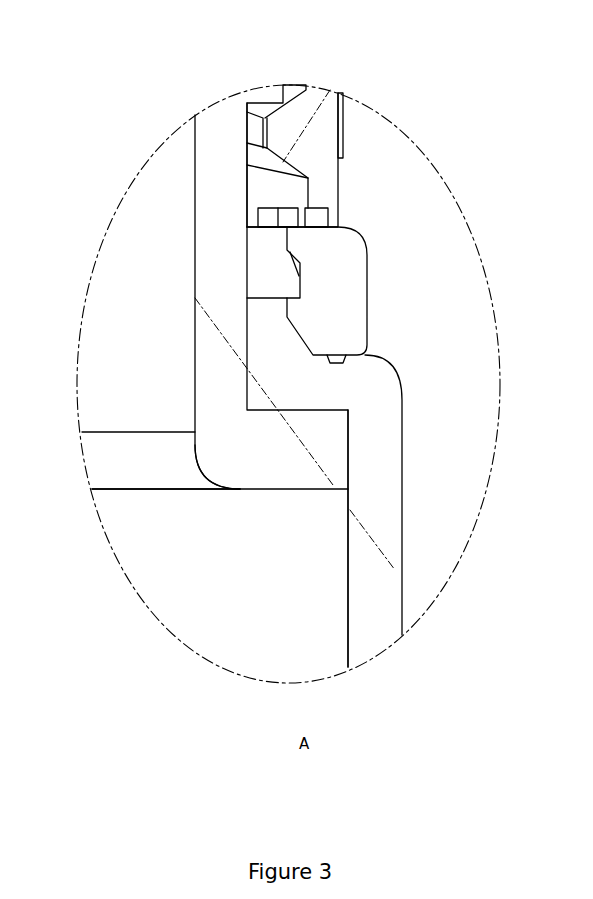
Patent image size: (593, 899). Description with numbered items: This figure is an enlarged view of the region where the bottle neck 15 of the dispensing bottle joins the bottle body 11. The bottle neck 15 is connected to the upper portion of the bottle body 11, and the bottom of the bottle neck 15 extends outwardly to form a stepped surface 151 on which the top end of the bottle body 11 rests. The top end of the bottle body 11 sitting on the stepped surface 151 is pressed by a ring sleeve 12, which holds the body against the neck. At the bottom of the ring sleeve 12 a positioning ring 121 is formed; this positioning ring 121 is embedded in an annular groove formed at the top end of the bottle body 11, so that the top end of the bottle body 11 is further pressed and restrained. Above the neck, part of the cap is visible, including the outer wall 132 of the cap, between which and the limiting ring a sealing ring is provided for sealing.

The bottle body 11 is at (382, 477).
The ring sleeve 12 is at (337, 307).
The positioning ring 121 is at (343, 357).
The outer wall of the cap 132 is at (318, 168).
The bottle neck 15 is at (217, 387).
The stepped surface 151 is at (292, 465).